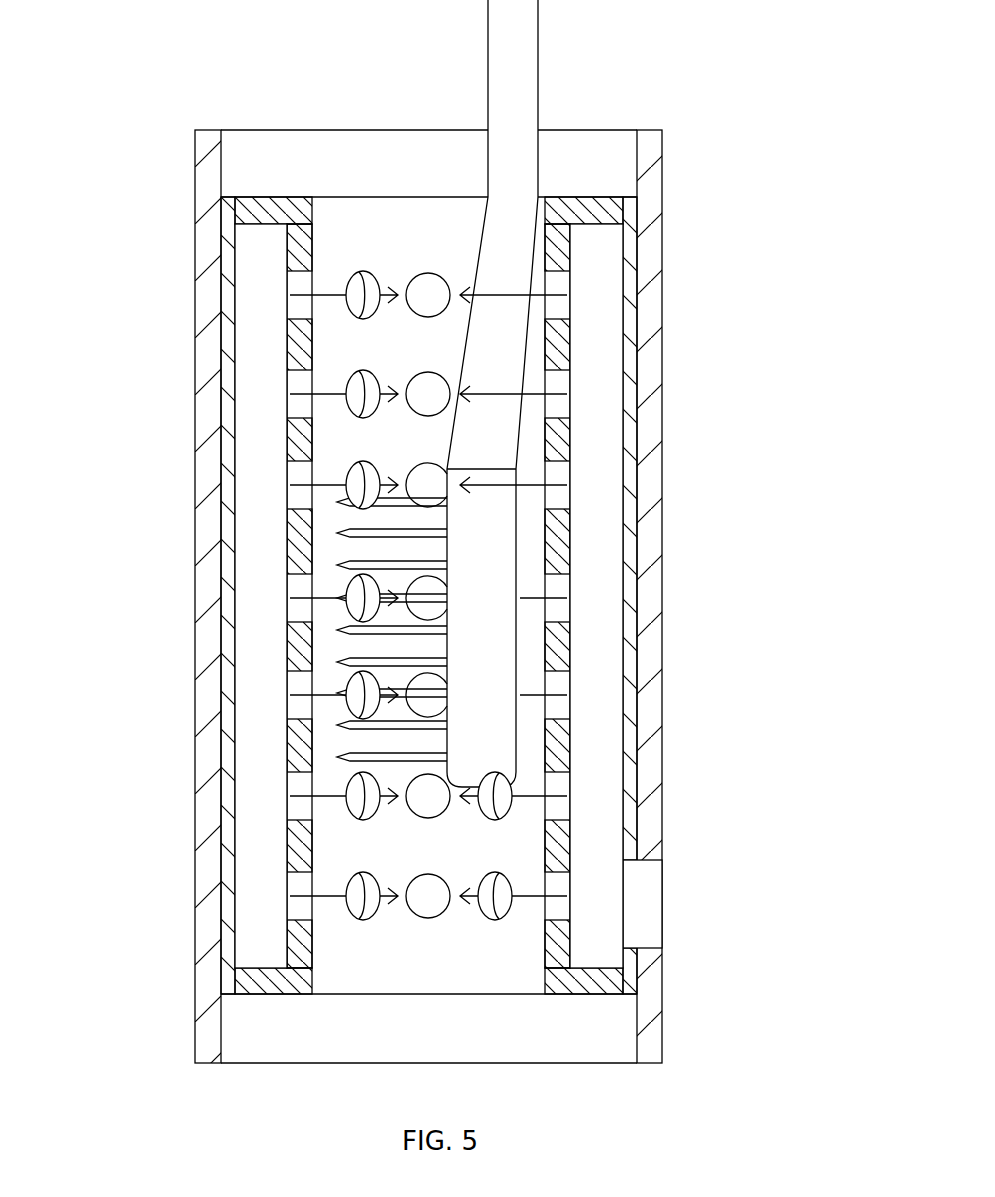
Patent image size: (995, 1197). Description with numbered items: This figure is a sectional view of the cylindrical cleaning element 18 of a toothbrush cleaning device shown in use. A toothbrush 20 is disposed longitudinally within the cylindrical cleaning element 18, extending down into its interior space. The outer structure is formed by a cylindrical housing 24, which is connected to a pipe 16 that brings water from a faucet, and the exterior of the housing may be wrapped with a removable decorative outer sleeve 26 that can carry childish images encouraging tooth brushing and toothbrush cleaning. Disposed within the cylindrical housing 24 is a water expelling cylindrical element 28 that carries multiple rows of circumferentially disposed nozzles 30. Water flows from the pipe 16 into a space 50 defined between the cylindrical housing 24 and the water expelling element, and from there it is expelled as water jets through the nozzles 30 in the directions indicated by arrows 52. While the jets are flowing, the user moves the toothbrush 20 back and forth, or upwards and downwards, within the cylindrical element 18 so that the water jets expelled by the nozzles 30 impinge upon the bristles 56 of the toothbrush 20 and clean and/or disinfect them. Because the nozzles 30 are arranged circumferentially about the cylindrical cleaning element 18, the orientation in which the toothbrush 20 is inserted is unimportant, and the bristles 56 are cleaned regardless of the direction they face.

The pipe 16 is at (643, 909).
The cylindrical cleaning element 18 is at (160, 448).
The toothbrush 20 is at (520, 100).
The cylindrical housing 24 is at (230, 243).
The outer sleeve 26 is at (207, 292).
The water expelling cylindrical element 28 is at (272, 207).
The nozzles 30 is at (422, 283).
The space 50 is at (600, 378).
The arrows 52 is at (525, 482).
The bristles 56 is at (347, 535).